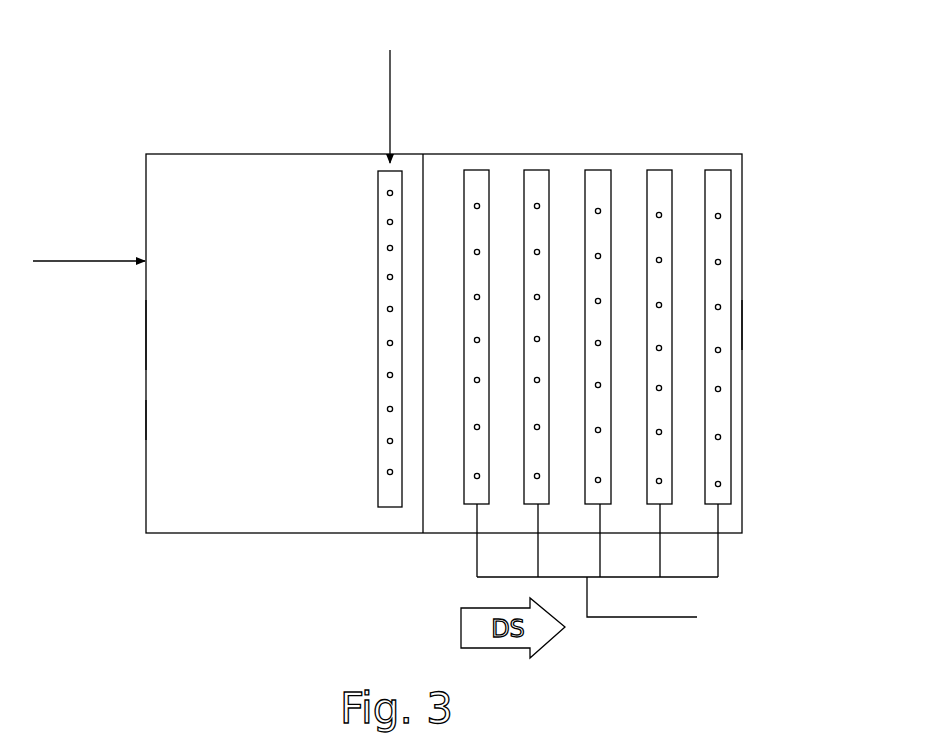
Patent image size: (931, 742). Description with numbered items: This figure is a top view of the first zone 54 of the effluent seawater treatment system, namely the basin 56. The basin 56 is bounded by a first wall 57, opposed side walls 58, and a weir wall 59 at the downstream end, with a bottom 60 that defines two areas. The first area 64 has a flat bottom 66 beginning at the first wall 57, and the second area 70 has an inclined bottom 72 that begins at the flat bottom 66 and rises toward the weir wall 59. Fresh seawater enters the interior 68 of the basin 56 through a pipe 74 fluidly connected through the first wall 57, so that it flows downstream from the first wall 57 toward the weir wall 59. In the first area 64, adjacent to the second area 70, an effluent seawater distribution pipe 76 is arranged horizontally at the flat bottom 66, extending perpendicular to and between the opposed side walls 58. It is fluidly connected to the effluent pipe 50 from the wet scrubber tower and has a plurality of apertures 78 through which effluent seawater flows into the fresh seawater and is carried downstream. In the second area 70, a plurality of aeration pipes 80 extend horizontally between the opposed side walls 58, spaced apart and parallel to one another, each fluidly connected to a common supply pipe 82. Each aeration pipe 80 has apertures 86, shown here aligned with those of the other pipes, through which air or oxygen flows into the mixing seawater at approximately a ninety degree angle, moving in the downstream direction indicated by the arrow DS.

The effluent pipe 50 is at (391, 52).
The first zone 54 is at (511, 78).
The basin 56 is at (757, 203).
The first wall 57 is at (147, 333).
The opposed side walls 58 is at (444, 153).
The weir wall 59 is at (742, 325).
The bottom 60 is at (168, 423).
The first area 64 is at (297, 172).
The flat bottom 66 is at (245, 483).
The interior 68 is at (218, 172).
The second area 70 is at (578, 178).
The inclined bottom 72 is at (517, 178).
The pipe 74 is at (76, 258).
The effluent seawater distribution pipe 76 is at (371, 229).
The apertures 78 is at (393, 193).
The aeration pipes 80 is at (463, 493).
The supply pipe 82 is at (478, 548).
The apertures 86 is at (474, 341).